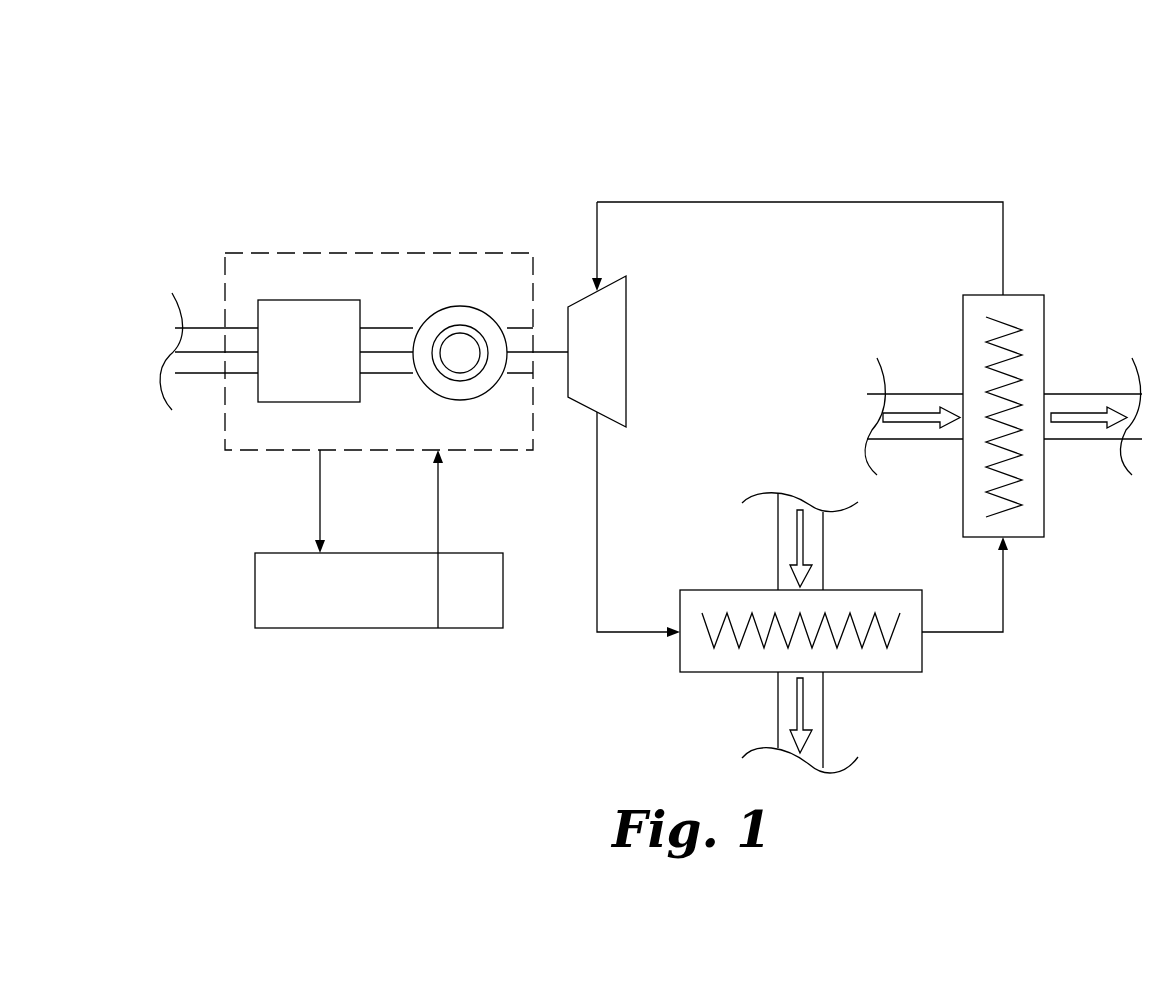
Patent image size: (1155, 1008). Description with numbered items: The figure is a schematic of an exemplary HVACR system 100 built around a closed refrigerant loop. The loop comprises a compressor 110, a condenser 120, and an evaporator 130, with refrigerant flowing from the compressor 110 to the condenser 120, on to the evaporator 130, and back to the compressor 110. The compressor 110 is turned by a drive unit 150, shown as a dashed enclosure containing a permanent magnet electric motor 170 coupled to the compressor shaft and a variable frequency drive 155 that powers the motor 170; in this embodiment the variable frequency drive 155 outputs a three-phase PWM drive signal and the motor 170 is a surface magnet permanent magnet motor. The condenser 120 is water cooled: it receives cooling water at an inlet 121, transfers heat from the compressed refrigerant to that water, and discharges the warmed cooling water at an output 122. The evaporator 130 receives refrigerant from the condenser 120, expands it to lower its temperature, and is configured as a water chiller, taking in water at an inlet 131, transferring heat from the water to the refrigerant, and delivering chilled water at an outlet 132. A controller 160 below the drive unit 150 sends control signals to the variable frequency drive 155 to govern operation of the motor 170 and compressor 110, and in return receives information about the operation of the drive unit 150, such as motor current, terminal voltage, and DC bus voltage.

The HVACR system 100 is at (1024, 128).
The compressor 110 is at (628, 315).
The condenser 120 is at (870, 588).
The inlet 121 is at (777, 542).
The output 122 is at (825, 718).
The evaporator 130 is at (1037, 295).
The inlet 131 is at (910, 393).
The outlet 132 is at (1090, 393).
The drive unit 150 is at (343, 252).
The variable frequency drive 155 is at (272, 300).
The controller 160 is at (373, 630).
The permanent magnet electric motor 170 is at (427, 317).